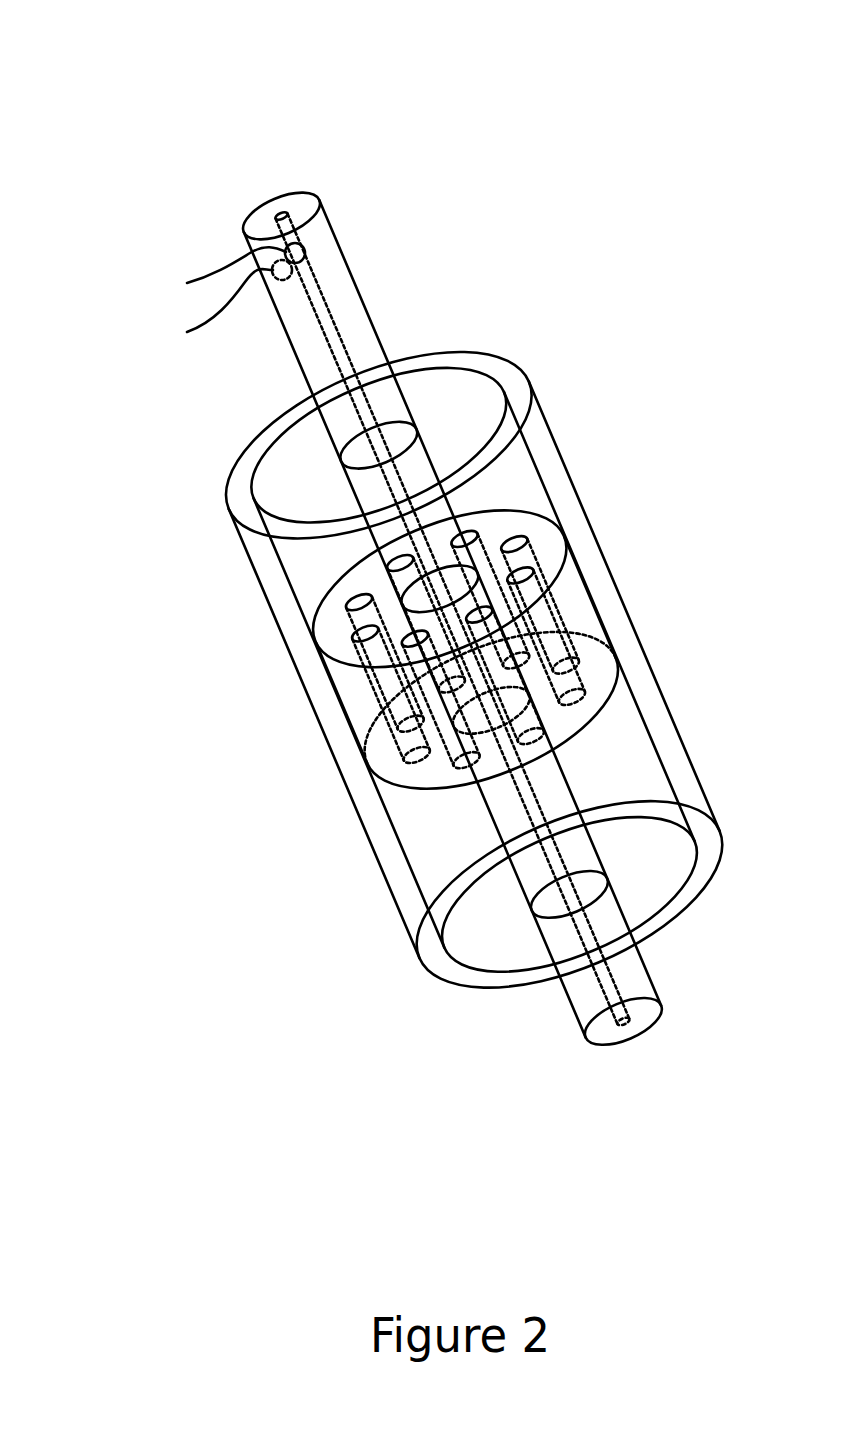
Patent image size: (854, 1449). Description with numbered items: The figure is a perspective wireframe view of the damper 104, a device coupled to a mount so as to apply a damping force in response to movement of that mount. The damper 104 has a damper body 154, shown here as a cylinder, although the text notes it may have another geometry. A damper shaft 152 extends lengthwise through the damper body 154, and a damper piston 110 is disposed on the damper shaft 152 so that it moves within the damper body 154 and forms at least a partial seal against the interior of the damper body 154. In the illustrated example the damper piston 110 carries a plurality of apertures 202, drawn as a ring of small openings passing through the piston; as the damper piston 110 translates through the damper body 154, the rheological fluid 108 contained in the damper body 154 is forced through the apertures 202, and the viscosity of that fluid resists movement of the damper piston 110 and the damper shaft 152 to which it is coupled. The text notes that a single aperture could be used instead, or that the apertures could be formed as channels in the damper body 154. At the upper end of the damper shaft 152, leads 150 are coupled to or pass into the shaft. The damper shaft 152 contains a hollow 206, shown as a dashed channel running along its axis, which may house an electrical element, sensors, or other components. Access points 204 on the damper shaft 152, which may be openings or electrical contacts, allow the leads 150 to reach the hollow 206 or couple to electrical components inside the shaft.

The damper 104 is at (156, 52).
The rheological fluid 108 is at (527, 646).
The damper piston 110 is at (447, 650).
The leads 150 is at (187, 283).
The damper shaft 152 is at (421, 588).
The damper body 154 is at (672, 745).
The apertures 202 is at (534, 570).
The access points 204 is at (303, 260).
The hollow 206 is at (364, 357).